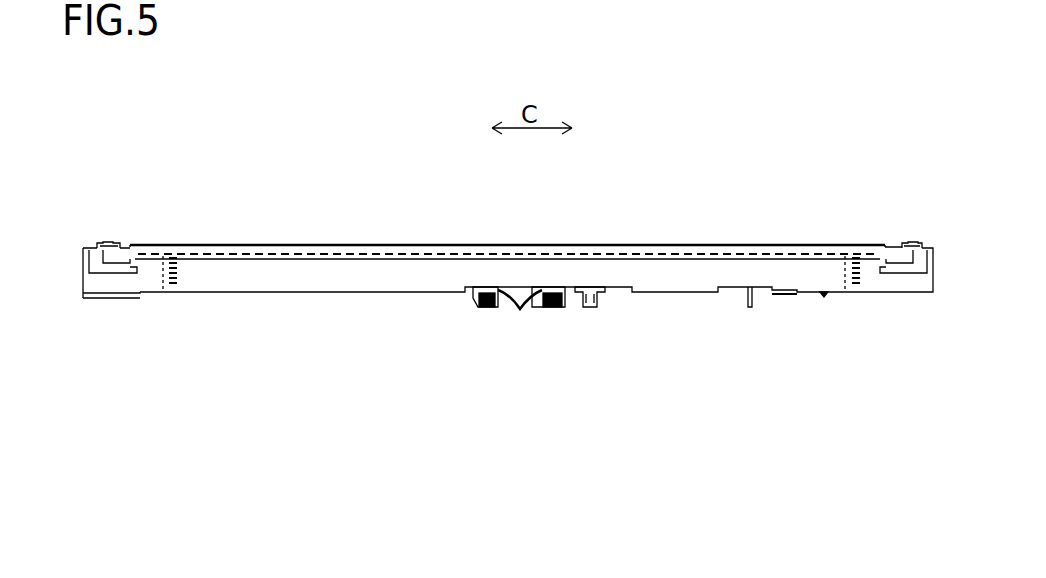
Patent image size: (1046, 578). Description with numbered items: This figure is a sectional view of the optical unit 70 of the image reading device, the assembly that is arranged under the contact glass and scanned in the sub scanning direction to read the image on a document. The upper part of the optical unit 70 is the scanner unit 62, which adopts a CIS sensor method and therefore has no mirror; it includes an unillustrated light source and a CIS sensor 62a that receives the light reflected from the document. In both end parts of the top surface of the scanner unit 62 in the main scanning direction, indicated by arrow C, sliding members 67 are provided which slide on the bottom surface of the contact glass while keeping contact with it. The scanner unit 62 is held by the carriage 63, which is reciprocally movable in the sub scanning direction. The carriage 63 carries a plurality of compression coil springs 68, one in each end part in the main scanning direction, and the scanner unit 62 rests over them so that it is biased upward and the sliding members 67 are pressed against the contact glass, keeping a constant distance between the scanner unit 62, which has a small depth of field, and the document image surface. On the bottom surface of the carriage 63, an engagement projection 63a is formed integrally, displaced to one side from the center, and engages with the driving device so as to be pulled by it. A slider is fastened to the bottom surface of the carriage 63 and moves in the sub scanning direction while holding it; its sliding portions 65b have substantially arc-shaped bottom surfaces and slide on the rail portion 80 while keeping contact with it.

The optical unit 70 is at (864, 167).
The scanner unit 62 is at (702, 248).
The CIS sensor 62a is at (577, 243).
The carriage 63 is at (693, 284).
The engagement projection 63a is at (588, 307).
The sliding portions 65b is at (515, 305).
The sliding members 67 is at (107, 243).
The compression coil springs 68 is at (164, 297).
The rail portion 80 is at (540, 307).